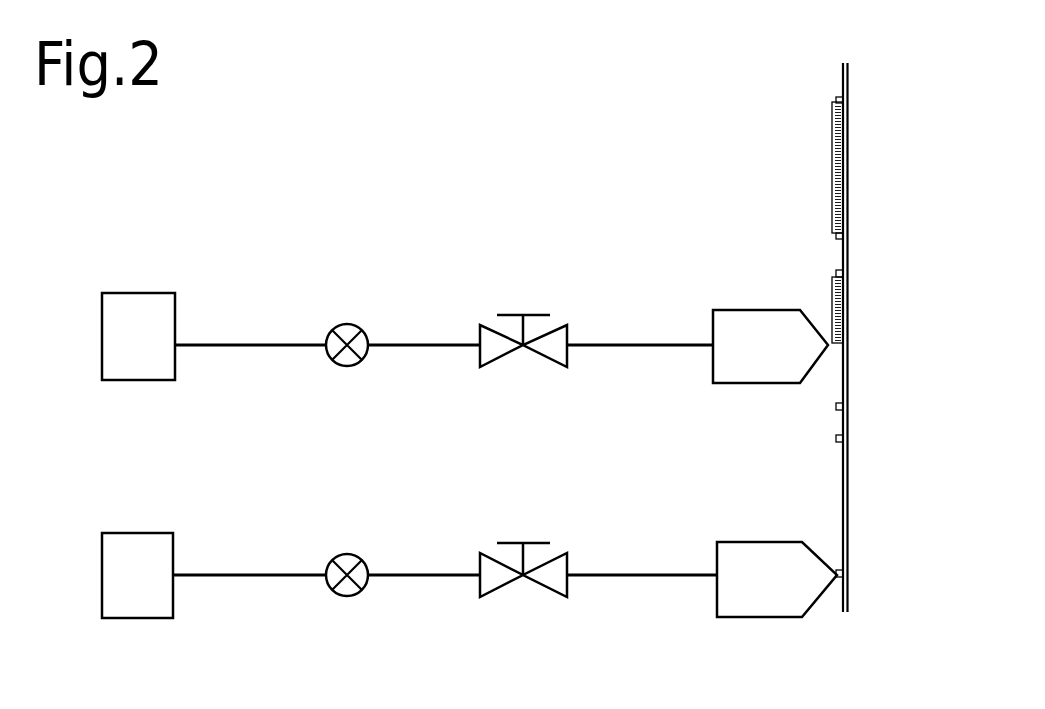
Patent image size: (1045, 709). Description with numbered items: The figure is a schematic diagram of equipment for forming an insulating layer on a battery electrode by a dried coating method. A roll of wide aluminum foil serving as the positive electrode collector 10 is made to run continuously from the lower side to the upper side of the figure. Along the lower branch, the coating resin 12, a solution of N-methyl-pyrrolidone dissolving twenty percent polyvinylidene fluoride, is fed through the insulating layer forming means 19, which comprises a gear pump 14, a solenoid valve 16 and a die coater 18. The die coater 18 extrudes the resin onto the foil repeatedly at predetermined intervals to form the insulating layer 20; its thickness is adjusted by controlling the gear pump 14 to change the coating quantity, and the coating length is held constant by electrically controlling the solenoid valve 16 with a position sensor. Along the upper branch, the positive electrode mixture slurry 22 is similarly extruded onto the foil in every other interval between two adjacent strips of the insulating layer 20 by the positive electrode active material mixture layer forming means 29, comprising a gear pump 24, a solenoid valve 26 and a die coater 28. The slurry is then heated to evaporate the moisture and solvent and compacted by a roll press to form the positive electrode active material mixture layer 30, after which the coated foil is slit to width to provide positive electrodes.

The positive electrode collector 10 is at (843, 77).
The coating resin 12 is at (155, 592).
The gear pump 14 is at (336, 589).
The solenoid valve 16 is at (562, 594).
The die coater 18 is at (740, 610).
The insulating layer forming means 19 is at (447, 697).
The insulating layer 20 is at (848, 100).
The positive electrode mixture slurry 22 is at (157, 352).
The gear pump 24 is at (336, 359).
The solenoid valve 26 is at (562, 364).
The die coater 28 is at (720, 376).
The positive electrode active material mixture layer forming means 29 is at (455, 244).
The positive electrode active material mixture layer 30 is at (836, 182).